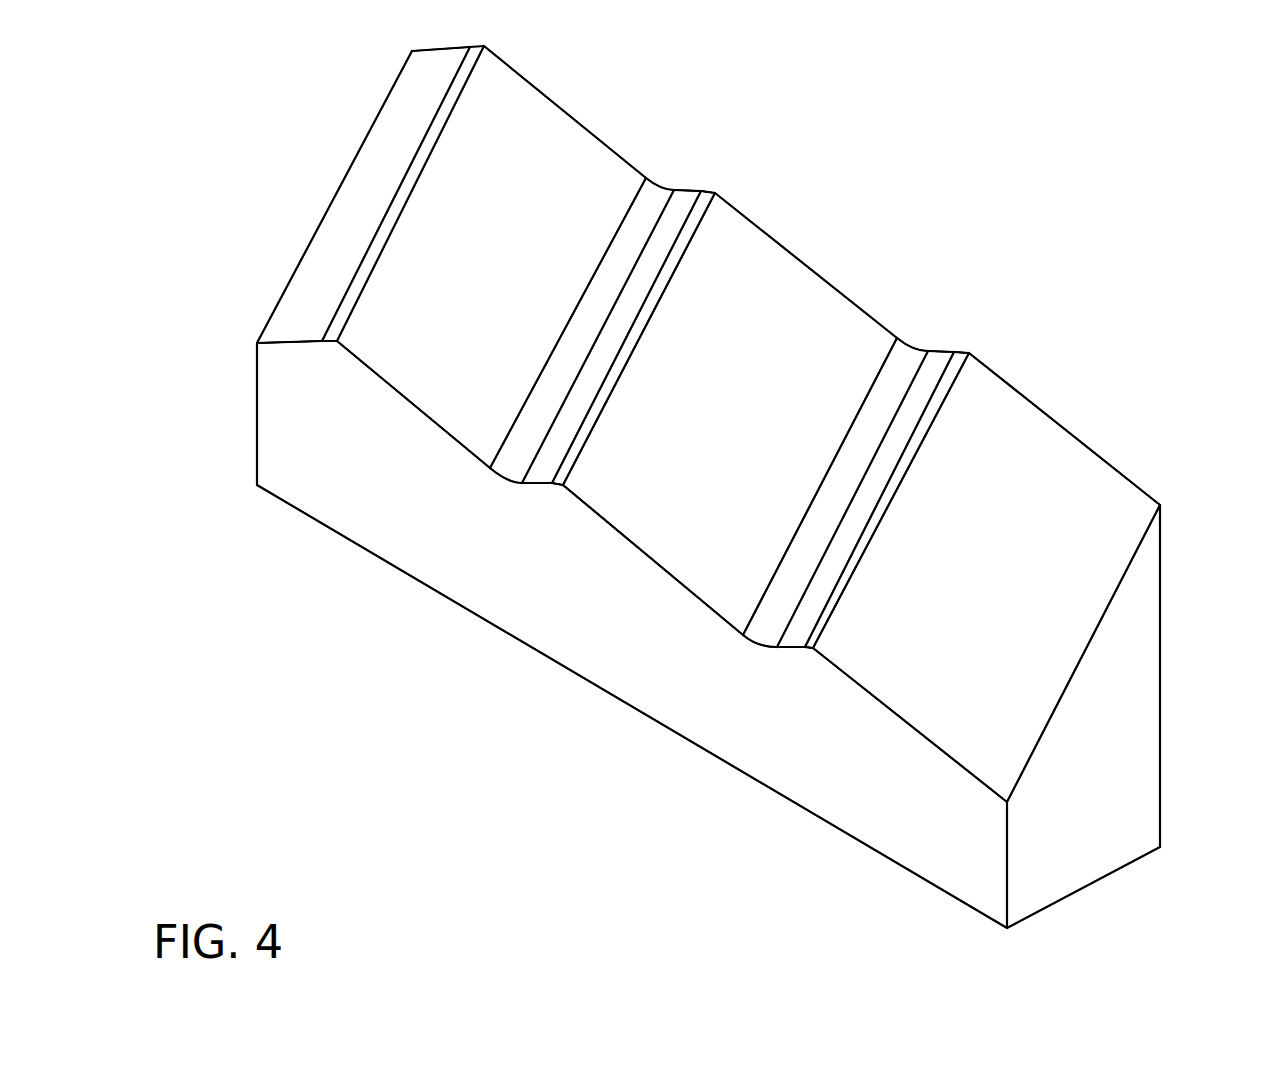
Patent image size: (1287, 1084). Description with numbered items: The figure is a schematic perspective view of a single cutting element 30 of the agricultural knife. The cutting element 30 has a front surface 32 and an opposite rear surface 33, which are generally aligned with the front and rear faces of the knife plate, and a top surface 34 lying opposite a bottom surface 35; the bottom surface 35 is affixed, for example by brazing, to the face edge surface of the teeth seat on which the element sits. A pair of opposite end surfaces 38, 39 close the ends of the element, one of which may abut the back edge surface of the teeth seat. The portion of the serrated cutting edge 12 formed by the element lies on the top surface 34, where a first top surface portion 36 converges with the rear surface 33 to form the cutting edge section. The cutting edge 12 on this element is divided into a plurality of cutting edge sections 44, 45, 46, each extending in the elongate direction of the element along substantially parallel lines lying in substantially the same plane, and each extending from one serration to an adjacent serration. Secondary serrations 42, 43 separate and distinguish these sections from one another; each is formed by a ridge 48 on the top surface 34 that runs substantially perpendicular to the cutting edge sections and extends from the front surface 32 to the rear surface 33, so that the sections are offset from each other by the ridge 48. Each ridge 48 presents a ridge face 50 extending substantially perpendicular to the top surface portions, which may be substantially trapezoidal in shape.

The cutting edge 12 is at (1003, 373).
The cutting element 30 is at (977, 243).
The front surface 32 is at (560, 608).
The rear surface 33 is at (1165, 593).
The top surface 34 is at (738, 277).
The bottom surface 35 is at (657, 730).
The first top surface portion 36 is at (807, 322).
The end surface 38 is at (1135, 777).
The end surface 39 is at (255, 422).
The secondary serration 42 is at (960, 333).
The secondary serration 43 is at (715, 177).
The cutting edge section 44 is at (1070, 430).
The cutting edge section 45 is at (740, 217).
The cutting edge section 46 is at (580, 127).
The ridge 48 is at (935, 340).
The ridge face 50 is at (327, 257).